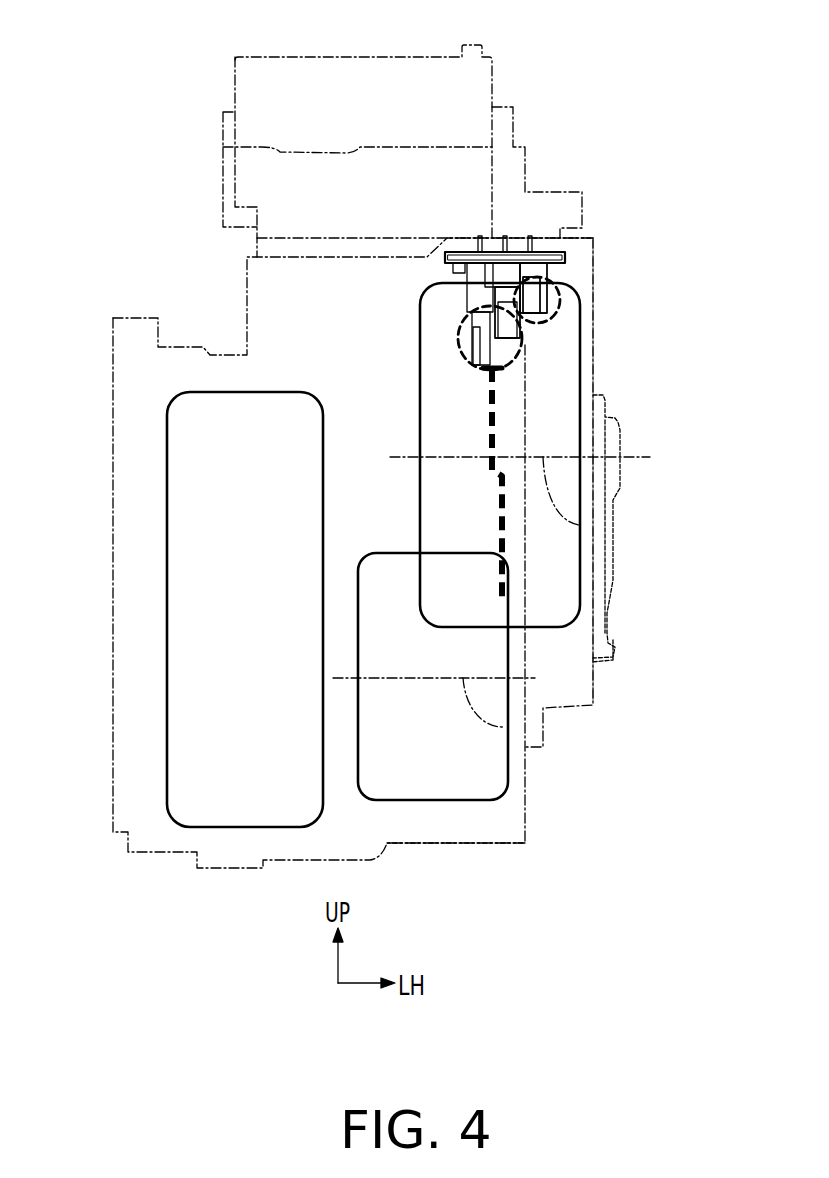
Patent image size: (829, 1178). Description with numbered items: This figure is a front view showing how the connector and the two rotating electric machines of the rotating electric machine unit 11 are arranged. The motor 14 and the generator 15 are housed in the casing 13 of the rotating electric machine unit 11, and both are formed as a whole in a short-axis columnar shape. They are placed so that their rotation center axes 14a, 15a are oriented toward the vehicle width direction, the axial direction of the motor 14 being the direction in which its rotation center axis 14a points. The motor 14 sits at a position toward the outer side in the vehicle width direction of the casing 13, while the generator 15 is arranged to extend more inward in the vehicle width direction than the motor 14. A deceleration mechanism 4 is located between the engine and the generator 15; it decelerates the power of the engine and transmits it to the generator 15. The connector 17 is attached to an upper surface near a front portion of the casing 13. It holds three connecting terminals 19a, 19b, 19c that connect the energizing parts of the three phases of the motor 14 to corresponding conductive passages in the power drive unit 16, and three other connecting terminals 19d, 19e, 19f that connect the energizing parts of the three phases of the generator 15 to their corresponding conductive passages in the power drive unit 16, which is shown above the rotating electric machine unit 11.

The deceleration mechanism 4 is at (167, 780).
The rotating electric machine unit 11 is at (608, 277).
The casing 13 is at (490, 843).
The motor 14 is at (582, 366).
The rotation center axis 14a is at (580, 525).
The generator 15 is at (508, 762).
The rotation center axis 15a is at (503, 727).
The power drive unit 16 is at (506, 71).
The connector 17 is at (582, 257).
The connecting terminal 19a is at (659, 291).
The connecting terminal 19b is at (630, 298).
The connecting terminal 19c is at (523, 297).
The connecting terminal 19d is at (611, 324).
The connecting terminal 19e is at (498, 327).
The connecting terminal 19f is at (475, 348).